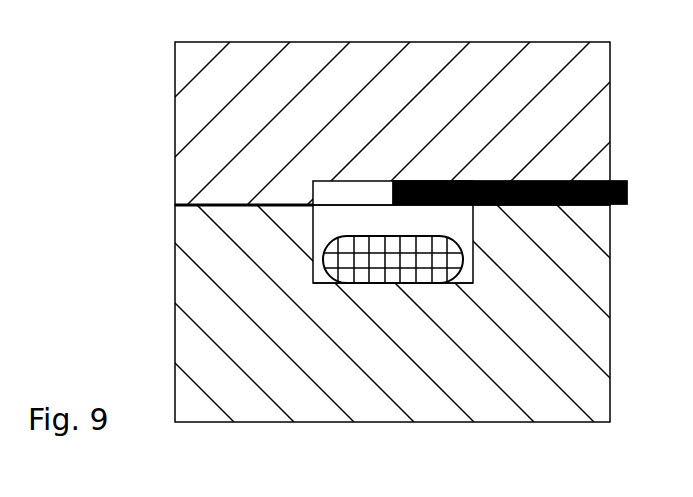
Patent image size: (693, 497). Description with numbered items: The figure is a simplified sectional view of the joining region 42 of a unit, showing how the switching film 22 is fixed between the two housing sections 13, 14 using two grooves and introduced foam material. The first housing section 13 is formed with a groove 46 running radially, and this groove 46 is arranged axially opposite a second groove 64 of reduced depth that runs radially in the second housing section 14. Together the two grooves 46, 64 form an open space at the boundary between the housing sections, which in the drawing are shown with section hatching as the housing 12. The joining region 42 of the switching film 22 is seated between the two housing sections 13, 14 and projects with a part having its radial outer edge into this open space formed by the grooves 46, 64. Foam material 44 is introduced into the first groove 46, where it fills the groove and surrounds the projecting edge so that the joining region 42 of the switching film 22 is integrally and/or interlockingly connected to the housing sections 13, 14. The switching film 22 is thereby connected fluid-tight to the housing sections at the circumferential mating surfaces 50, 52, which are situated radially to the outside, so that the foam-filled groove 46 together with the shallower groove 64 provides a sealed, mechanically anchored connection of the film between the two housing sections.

The housing 12 is at (346, 232).
The second housing section 14 is at (193, 137).
The first housing section 13 is at (193, 302).
The groove 64 is at (349, 181).
The mating surface 52 is at (443, 181).
The switching film 22 is at (620, 181).
The joining region 42 is at (424, 210).
The groove 46 is at (322, 283).
The mating surface 50 is at (412, 284).
The foam material 44 is at (445, 260).